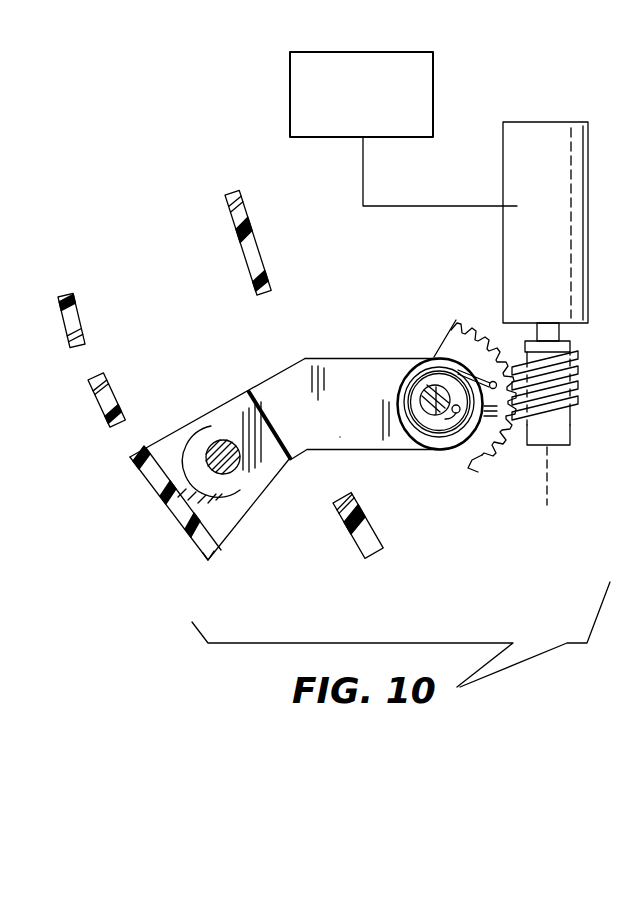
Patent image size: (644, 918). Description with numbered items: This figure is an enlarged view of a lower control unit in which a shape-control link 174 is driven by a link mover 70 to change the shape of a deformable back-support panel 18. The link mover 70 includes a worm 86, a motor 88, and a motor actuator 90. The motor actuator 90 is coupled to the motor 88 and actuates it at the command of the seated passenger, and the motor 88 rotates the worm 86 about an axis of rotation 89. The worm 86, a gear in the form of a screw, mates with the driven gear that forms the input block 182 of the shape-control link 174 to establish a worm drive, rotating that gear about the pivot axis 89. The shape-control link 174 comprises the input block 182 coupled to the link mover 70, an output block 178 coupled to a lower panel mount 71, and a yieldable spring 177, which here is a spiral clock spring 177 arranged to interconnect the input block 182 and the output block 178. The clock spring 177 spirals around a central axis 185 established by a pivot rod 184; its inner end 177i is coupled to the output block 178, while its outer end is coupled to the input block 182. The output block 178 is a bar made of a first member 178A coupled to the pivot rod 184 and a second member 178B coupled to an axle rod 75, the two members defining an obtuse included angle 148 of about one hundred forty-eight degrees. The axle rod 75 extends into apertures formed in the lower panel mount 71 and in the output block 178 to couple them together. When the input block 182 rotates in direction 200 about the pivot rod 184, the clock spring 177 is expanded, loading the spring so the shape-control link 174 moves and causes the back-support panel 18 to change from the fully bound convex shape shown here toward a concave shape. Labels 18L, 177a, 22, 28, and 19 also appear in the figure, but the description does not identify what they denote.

The motor actuator 90 is at (290, 104).
The motor 88 is at (560, 178).
The link mover 70 is at (592, 265).
The worm 86 is at (565, 430).
The axis of rotation 89 is at (552, 481).
The direction 200 is at (472, 277).
The input block 182 is at (492, 455).
The output block 178 is at (375, 426).
The shape-control link 174 is at (348, 352).
The first member 178A is at (340, 437).
The second member 178B is at (270, 392).
The obtuse included angle 148 is at (292, 467).
The lower panel mount 71 is at (235, 518).
The strip lower portion 18L is at (178, 540).
The axle rod 75 is at (217, 452).
The clock spring 177 is at (393, 380).
The central axis 185 is at (424, 388).
The pivot rod 184 is at (436, 416).
The pin 177a is at (495, 381).
The inner end 177i is at (458, 414).
The strip segment 22 is at (270, 240).
The back-support panel 18 is at (95, 325).
The strip end 28 is at (83, 305).
The strip segment 19 is at (102, 365).